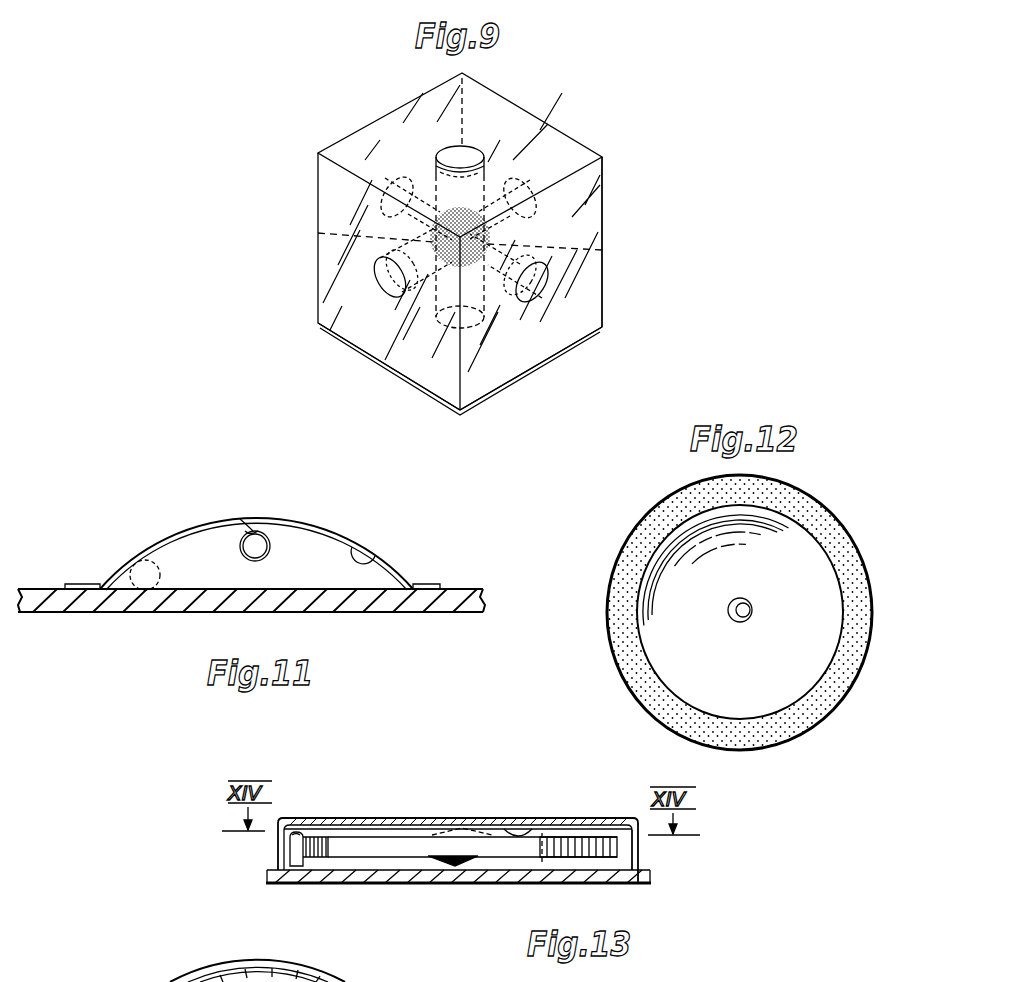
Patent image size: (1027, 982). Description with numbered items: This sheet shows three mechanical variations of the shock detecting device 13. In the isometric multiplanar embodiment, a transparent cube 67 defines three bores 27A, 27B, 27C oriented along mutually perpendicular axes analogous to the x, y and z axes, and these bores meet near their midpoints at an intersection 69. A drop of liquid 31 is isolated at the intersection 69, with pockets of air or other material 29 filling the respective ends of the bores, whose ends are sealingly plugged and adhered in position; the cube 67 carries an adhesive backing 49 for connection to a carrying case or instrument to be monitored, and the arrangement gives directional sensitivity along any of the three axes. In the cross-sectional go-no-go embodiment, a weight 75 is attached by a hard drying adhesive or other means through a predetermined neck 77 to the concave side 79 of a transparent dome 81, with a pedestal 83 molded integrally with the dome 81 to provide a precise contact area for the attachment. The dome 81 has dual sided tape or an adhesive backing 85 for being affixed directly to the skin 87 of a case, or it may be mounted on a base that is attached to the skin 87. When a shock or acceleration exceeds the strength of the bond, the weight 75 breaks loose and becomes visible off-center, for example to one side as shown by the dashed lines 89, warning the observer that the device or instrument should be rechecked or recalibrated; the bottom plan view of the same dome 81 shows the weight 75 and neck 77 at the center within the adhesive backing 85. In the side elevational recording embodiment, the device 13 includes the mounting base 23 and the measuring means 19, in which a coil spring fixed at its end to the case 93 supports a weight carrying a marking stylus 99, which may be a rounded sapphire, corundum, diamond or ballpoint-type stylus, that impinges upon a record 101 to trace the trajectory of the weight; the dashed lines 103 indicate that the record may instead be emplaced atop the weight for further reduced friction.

In FIG. 9, the shock detecting device 13 is at (556, 82).
In FIG. 11, the shock detecting device 13 is at (180, 462).
In FIG. 12, the shock detecting device 13 is at (588, 540).
In FIG. 13, the shock detecting device 13 is at (240, 858).
In FIG. 9, the drop of liquid 31 is at (458, 152).
In FIG. 9, the bore 27A is at (390, 192).
In FIG. 9, the bore 27B is at (318, 233).
In FIG. 9, the bore 27C is at (466, 270).
In FIG. 9, the pockets of air or other material 29 is at (602, 250).
In FIG. 9, the transparent cube 67 is at (568, 215).
In FIG. 9, the intersection 69 is at (425, 345).
In FIG. 9, the adhesive backing 49 is at (492, 396).
In FIG. 11, the skin 87 is at (160, 613).
In FIG. 11, the transparent dome 81 is at (178, 530).
In FIG. 11, the weight 75 is at (270, 546).
In FIG. 12, the weight 75 is at (735, 612).
In FIG. 11, the neck 77 is at (238, 518).
In FIG. 12, the neck 77 is at (727, 617).
In FIG. 11, the pedestal 83 is at (252, 530).
In FIG. 11, the dashed lines 89 is at (143, 562).
In FIG. 11, the concave side 79 is at (375, 546).
In FIG. 11, the adhesive backing 85 is at (440, 590).
In FIG. 12, the adhesive backing 85 is at (853, 572).
In FIG. 13, the measuring means 19 is at (447, 790).
In FIG. 13, the mounting base 23 is at (355, 884).
In FIG. 13, the case 93 is at (282, 873).
In FIG. 13, the marking stylus 99 is at (433, 882).
In FIG. 13, the record 101 is at (595, 860).
In FIG. 13, the dashed lines 103 is at (525, 829).